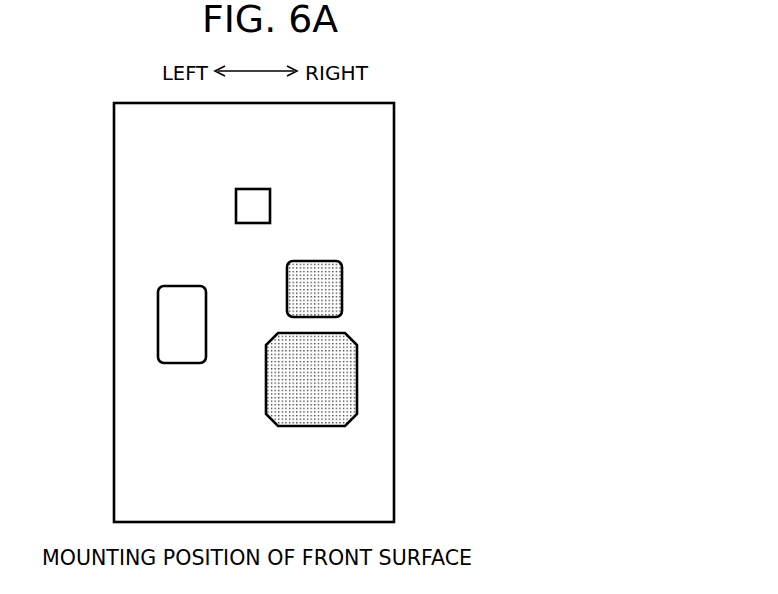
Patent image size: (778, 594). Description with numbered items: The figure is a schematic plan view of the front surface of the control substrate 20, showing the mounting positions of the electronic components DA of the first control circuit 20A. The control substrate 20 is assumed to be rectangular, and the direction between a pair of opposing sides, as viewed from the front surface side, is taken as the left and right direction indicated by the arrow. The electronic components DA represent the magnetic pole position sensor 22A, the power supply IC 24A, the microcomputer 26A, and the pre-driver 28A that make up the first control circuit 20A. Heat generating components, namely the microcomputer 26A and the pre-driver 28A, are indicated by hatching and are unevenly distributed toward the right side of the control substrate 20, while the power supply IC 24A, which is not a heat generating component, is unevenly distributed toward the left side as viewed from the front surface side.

The control substrate 20 is at (114, 213).
The first control circuit 20A is at (531, 136).
The magnetic pole position sensor 22A is at (270, 194).
The power supply integrated circuit 24A is at (202, 286).
The microcomputer 26A is at (357, 377).
The pre-driver 28A is at (342, 283).
The electronic component DA is at (490, 160).